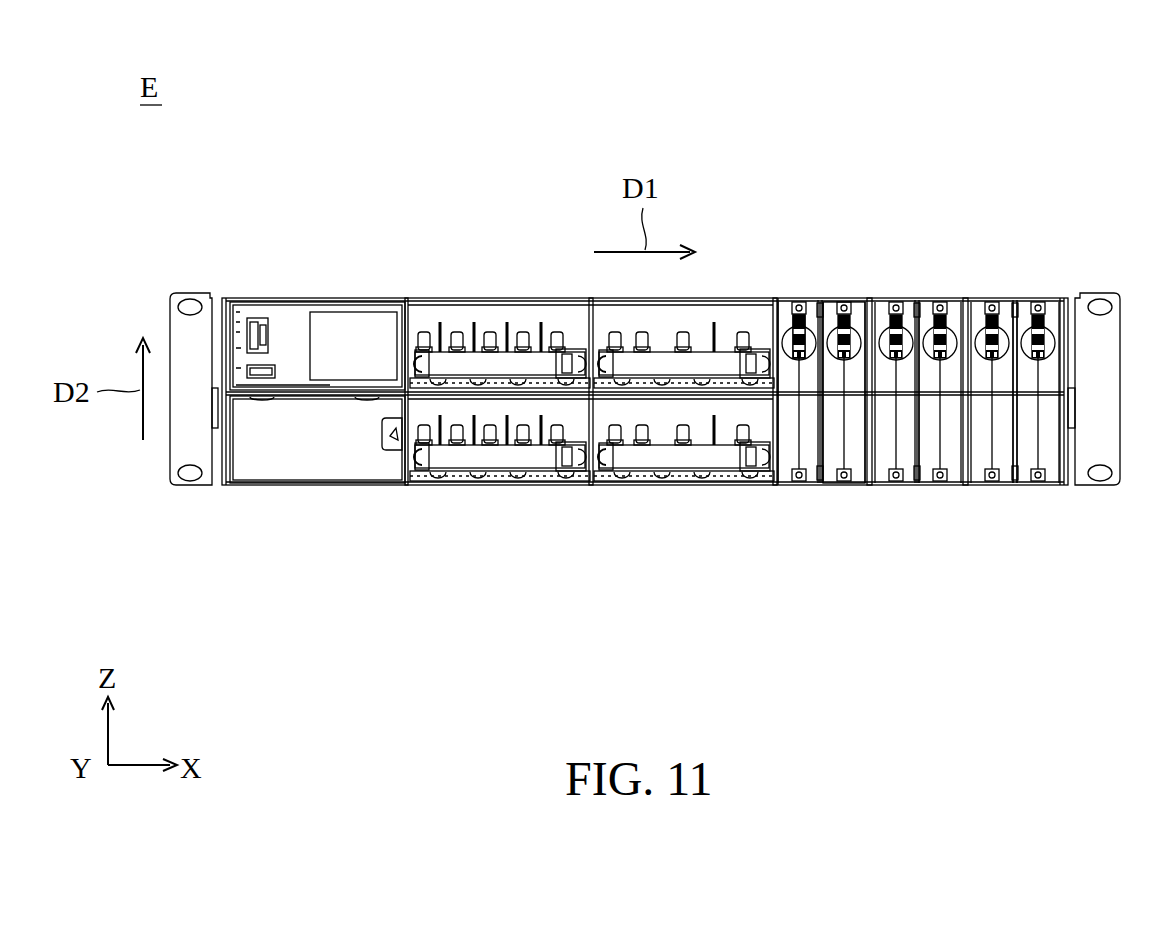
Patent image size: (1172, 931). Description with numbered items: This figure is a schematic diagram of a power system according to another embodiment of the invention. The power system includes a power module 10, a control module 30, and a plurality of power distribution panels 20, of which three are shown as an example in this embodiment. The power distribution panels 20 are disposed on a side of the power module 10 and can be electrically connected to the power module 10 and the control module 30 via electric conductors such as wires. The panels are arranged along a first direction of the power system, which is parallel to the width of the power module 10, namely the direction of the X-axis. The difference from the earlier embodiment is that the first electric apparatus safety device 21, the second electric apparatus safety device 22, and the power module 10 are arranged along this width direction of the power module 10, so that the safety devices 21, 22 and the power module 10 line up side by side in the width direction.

The power module 10 is at (673, 450).
The power distribution panels 20 is at (820, 500).
The first electric apparatus safety device 21 is at (834, 388).
The second electric apparatus safety device 22 is at (808, 388).
The control module 30 is at (303, 352).